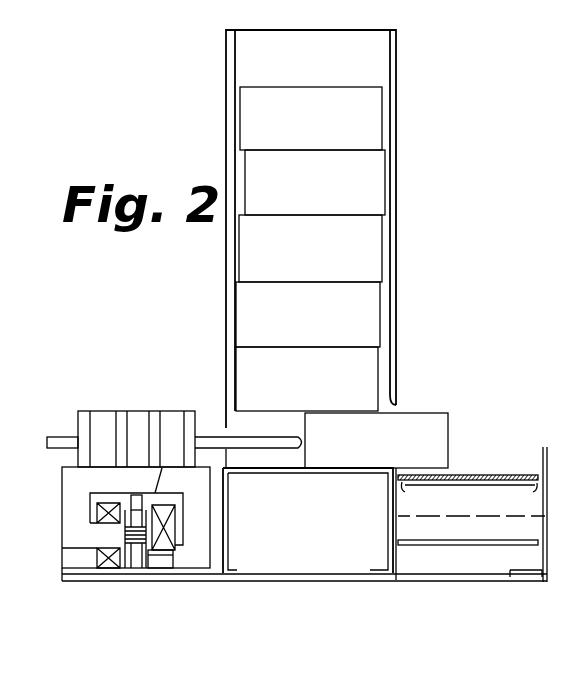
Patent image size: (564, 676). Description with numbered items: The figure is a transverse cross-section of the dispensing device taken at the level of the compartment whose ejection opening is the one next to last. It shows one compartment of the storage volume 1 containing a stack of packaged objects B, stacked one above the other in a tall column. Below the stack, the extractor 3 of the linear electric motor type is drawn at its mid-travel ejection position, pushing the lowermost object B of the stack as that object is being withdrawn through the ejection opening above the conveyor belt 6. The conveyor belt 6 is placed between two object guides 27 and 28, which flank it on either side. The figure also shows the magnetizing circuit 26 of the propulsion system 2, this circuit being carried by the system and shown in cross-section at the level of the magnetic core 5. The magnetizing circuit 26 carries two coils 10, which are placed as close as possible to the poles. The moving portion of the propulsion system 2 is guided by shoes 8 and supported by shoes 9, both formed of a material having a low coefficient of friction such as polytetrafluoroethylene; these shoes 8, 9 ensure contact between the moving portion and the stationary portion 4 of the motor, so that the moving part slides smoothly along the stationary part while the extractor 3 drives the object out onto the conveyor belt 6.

The storage volume 1 is at (383, 58).
The propulsion system 2 is at (202, 563).
The extractor 3 is at (113, 411).
The stationary portion of the motor 4 is at (130, 567).
The magnetic core 5 is at (135, 540).
The conveyor belt 6 is at (480, 473).
The shoes 8 is at (122, 563).
The shoes 9 is at (135, 497).
The coils 10 is at (97, 513).
The magnetizing circuit 26 is at (72, 527).
The object guide 27 is at (547, 448).
The object guide 28 is at (397, 468).